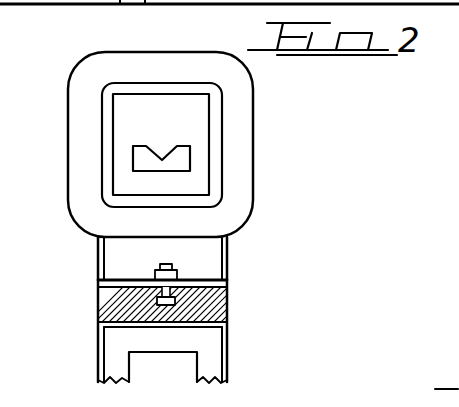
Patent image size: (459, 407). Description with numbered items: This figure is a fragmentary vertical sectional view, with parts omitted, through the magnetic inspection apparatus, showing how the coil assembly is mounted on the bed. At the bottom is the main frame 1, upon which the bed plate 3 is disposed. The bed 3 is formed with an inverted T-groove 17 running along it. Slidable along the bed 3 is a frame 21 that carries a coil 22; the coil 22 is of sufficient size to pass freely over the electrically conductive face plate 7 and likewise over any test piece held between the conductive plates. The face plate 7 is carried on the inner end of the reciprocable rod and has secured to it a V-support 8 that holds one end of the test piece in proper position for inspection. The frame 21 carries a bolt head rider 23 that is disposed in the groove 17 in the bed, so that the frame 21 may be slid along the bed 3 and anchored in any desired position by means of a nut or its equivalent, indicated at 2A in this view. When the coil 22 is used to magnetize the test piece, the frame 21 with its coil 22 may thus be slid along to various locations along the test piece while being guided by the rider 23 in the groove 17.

The coil 22 is at (80, 122).
The face plate 7 is at (188, 124).
The V-support 8 is at (177, 162).
The frame 21 is at (222, 272).
The fastening bolt 2A is at (168, 268).
The bed plate 3 is at (212, 305).
The inverted T-groove 17 is at (153, 303).
The bolt head rider 23 is at (167, 305).
The frame 1 is at (217, 357).